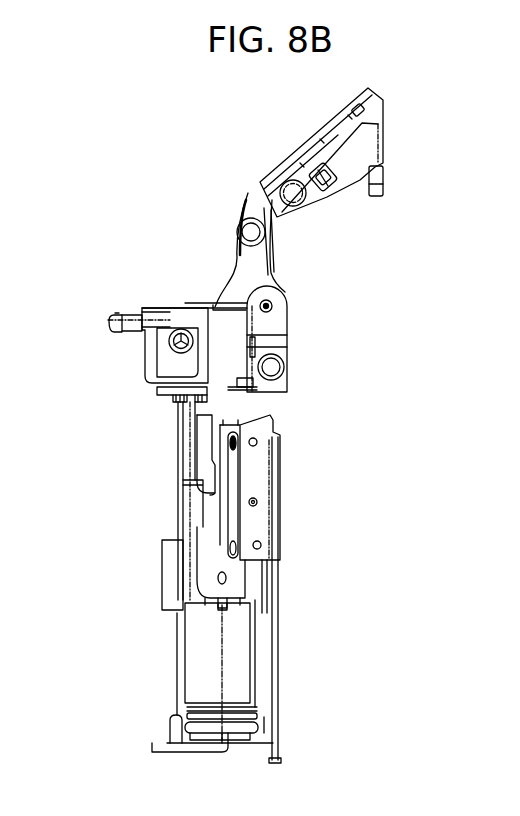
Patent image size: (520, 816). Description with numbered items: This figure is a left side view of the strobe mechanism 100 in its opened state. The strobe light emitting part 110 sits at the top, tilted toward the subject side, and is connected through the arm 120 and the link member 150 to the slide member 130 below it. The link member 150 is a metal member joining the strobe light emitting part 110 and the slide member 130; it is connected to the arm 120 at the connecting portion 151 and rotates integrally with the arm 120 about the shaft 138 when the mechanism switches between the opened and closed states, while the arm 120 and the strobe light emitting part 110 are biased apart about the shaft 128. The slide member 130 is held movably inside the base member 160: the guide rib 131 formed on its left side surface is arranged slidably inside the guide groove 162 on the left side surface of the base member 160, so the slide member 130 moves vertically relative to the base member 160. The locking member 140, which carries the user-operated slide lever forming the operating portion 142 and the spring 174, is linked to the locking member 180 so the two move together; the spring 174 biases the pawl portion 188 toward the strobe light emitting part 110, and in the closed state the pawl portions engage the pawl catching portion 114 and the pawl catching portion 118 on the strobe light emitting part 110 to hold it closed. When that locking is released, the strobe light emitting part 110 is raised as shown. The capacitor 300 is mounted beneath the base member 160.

The strobe mechanism 100 is at (162, 136).
The strobe light emitting part 110 is at (370, 143).
The pawl catching portion 114 is at (330, 190).
The pawl catching portion 118 is at (383, 178).
The arm 120 is at (245, 275).
The shaft 128 is at (288, 183).
The slide member 130 is at (275, 317).
The guide rib 131 is at (270, 427).
The shaft 138 is at (268, 303).
The locking member 140 is at (152, 362).
The operating portion 142 is at (115, 317).
The link member 150 is at (270, 240).
The connecting portion 151 is at (253, 230).
The base member 160 is at (260, 473).
The guide groove 162 is at (237, 512).
The spring 174 is at (175, 332).
The locking member 180 is at (258, 392).
The pawl portion 188 is at (252, 388).
The capacitor 300 is at (238, 670).